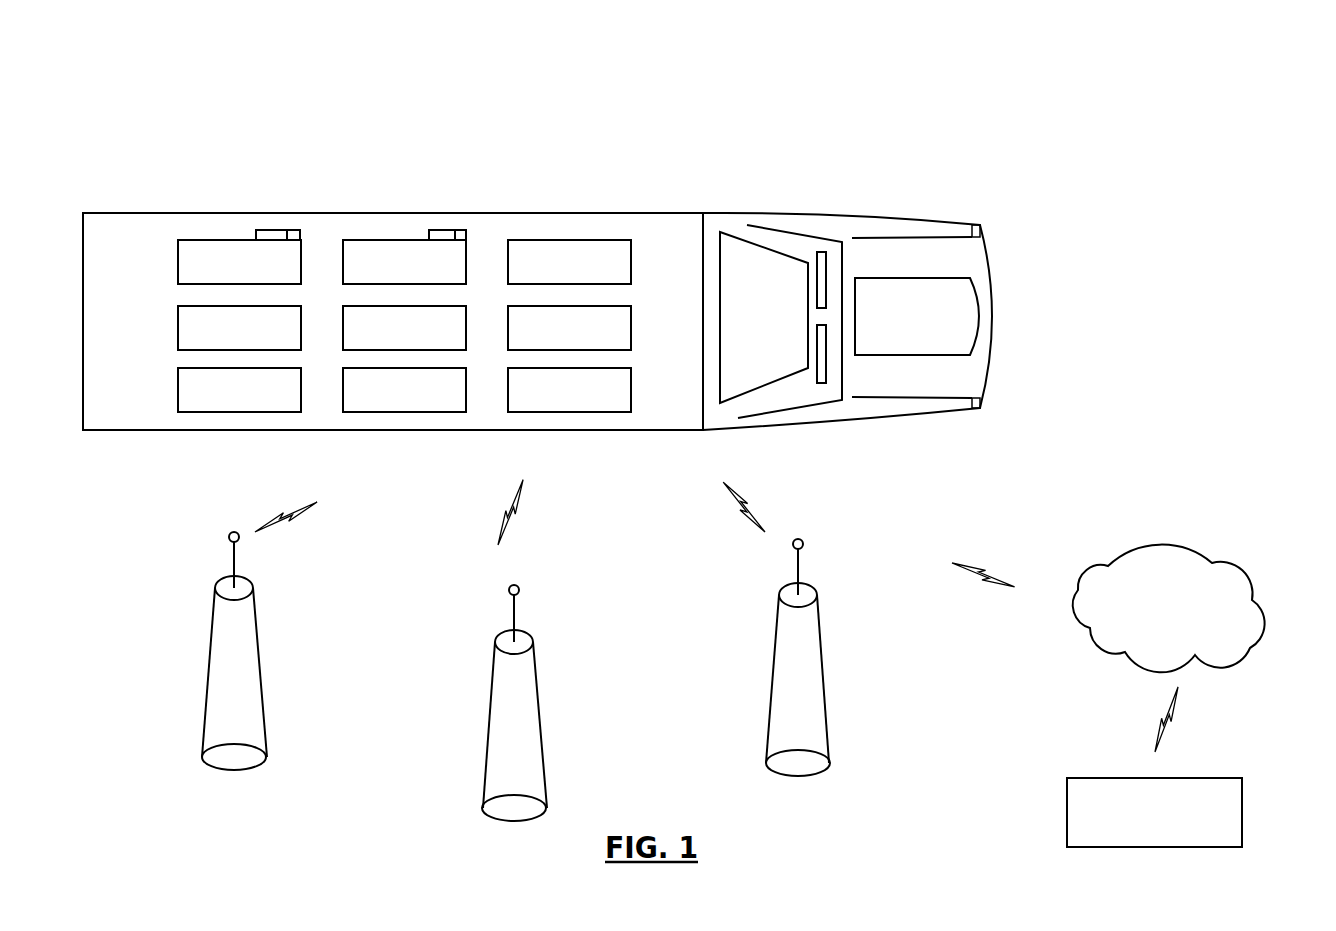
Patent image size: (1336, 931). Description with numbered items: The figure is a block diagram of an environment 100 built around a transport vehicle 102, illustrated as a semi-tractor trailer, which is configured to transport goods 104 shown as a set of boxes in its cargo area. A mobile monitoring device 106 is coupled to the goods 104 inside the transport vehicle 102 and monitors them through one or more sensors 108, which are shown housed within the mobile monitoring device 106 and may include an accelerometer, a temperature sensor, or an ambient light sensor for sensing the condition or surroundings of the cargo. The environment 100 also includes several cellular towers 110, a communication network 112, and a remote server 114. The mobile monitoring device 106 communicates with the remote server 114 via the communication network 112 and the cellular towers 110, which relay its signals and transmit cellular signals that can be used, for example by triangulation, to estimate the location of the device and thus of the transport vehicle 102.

The environment 100 is at (202, 92).
The transport vehicle 102 is at (777, 215).
The goods 104 is at (218, 240).
The mobile monitoring device 106 is at (277, 230).
The sensors 108 is at (300, 230).
The cellular towers 110 is at (260, 673).
The communication network 112 is at (1160, 545).
The remote server 114 is at (1242, 812).